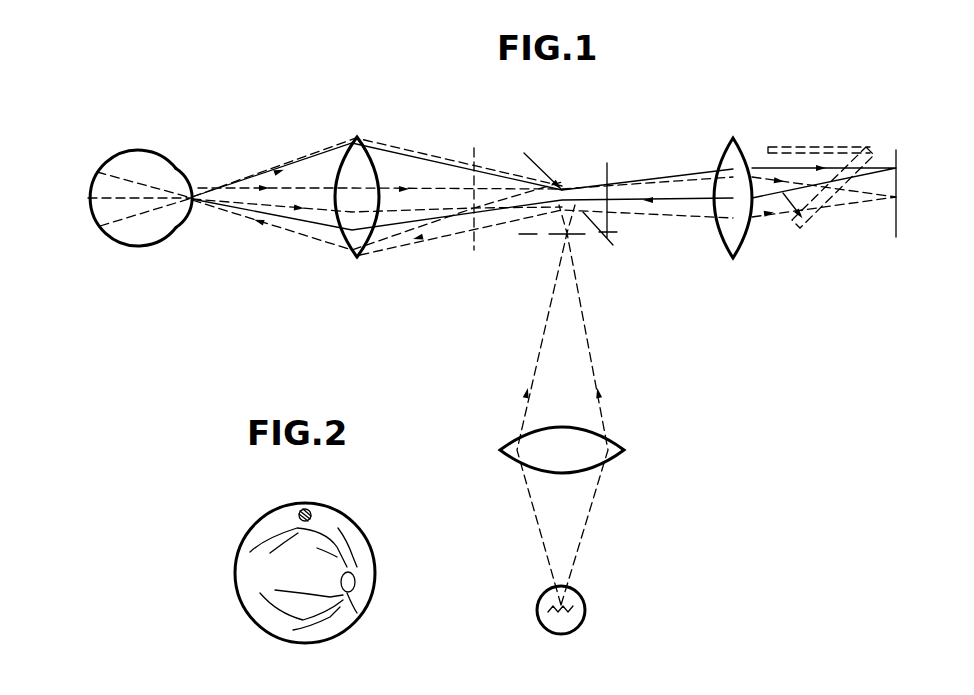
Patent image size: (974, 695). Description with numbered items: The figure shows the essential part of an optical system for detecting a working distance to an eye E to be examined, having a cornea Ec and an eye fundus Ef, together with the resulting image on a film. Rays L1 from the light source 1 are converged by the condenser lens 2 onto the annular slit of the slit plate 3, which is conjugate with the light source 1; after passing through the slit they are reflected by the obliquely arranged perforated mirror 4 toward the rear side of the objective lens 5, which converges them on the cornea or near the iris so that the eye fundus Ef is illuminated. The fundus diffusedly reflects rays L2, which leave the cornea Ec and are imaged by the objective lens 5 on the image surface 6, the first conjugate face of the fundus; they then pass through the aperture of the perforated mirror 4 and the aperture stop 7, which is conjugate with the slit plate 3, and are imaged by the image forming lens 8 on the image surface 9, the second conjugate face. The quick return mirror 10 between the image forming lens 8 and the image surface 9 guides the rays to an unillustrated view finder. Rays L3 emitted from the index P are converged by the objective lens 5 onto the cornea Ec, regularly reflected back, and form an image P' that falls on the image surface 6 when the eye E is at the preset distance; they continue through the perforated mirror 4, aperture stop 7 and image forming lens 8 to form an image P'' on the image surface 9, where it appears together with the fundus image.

In FIG. 1, the eye to be examined E is at (127, 162).
In FIG. 1, the cornea Ec is at (190, 175).
In FIG. 1, the eye fundus Ef is at (92, 216).
In FIG. 1, the rays from the light source L1 is at (250, 168).
In FIG. 1, the rays diffusedly reflected by the eye fundus L2 is at (297, 174).
In FIG. 1, the rays emitted from the index L3 is at (432, 160).
In FIG. 1, the light source 1 is at (584, 611).
In FIG. 1, the condenser lens 2 is at (614, 454).
In FIG. 1, the slit plate 3 is at (531, 235).
In FIG. 1, the perforated mirror 4 is at (532, 165).
In FIG. 1, the objective lens 5 is at (356, 140).
In FIG. 1, the image surface of the objective lens 6 is at (474, 150).
In FIG. 1, the aperture stop 7 is at (607, 172).
In FIG. 1, the image forming lens 8 is at (725, 152).
In FIG. 1, the image surface 9 is at (896, 224).
In FIG. 1, the quick return mirror 10 is at (807, 220).
In FIG. 1, the index P is at (565, 174).
In FIG. 1, the image of the index P' is at (456, 245).
In FIG. 1, the image of the index on the image surface P'' is at (919, 155).
In FIG. 2, the image of the index on the image surface P'' is at (325, 494).